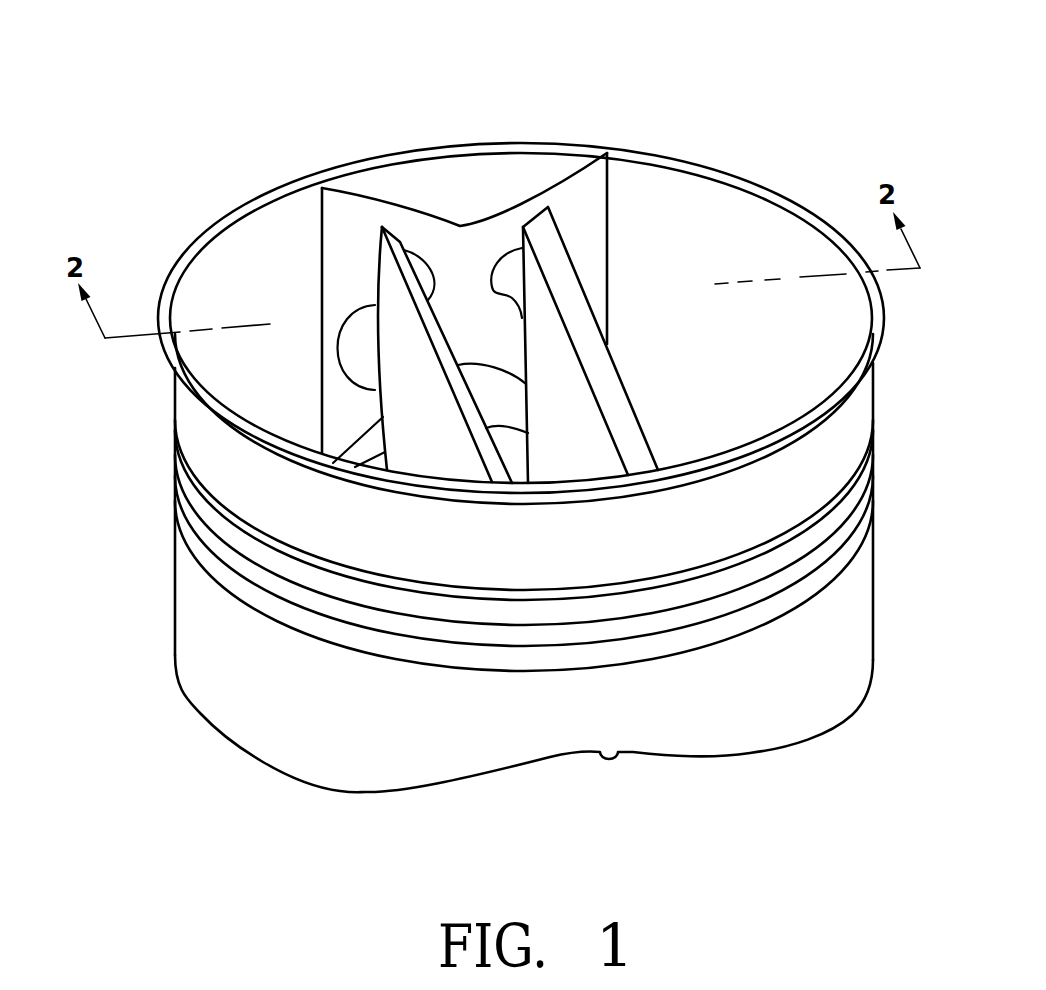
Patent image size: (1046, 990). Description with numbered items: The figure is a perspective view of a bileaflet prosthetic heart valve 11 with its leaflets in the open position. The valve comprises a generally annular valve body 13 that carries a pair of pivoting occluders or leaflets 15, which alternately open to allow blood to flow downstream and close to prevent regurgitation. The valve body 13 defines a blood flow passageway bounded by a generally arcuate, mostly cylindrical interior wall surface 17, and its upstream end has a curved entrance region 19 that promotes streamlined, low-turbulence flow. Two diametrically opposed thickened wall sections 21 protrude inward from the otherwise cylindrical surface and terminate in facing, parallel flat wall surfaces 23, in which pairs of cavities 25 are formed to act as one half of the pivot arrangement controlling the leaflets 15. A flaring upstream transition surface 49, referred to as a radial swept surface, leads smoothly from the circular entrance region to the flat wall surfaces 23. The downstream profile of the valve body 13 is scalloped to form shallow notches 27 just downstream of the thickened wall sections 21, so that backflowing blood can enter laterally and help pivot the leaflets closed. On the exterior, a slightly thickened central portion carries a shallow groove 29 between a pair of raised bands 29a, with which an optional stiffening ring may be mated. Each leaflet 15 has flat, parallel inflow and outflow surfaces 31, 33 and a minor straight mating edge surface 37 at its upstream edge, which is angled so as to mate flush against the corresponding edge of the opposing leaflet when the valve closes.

The prosthetic heart valve 11 is at (484, 431).
The valve body 13 is at (205, 440).
The leaflets 15 is at (376, 400).
The interior wall surface 17 is at (695, 345).
The curved entrance region 19 is at (228, 262).
The thickened wall sections 21 is at (392, 198).
The flat wall surfaces 23 is at (500, 338).
The cavities 25 is at (350, 326).
The shallow notches 27 is at (533, 770).
The shallow groove 29 is at (226, 553).
The raised bands 29a is at (197, 497).
The inflow surface 31 is at (443, 430).
The outflow surface 33 is at (583, 430).
The minor straight mating edge surface 37 is at (563, 279).
The upstream transition surface 49 is at (468, 165).